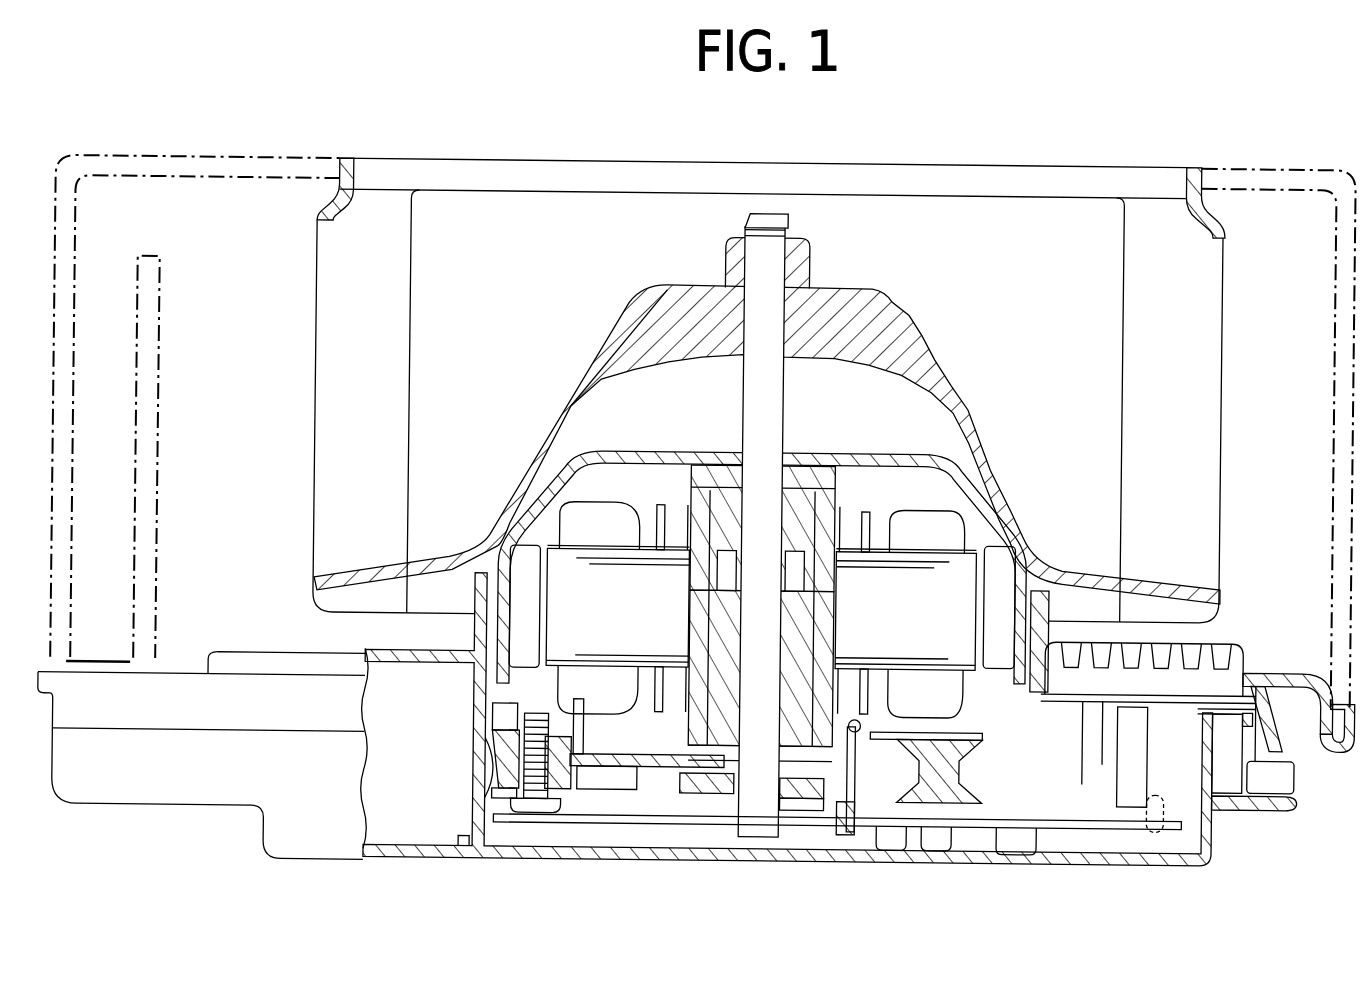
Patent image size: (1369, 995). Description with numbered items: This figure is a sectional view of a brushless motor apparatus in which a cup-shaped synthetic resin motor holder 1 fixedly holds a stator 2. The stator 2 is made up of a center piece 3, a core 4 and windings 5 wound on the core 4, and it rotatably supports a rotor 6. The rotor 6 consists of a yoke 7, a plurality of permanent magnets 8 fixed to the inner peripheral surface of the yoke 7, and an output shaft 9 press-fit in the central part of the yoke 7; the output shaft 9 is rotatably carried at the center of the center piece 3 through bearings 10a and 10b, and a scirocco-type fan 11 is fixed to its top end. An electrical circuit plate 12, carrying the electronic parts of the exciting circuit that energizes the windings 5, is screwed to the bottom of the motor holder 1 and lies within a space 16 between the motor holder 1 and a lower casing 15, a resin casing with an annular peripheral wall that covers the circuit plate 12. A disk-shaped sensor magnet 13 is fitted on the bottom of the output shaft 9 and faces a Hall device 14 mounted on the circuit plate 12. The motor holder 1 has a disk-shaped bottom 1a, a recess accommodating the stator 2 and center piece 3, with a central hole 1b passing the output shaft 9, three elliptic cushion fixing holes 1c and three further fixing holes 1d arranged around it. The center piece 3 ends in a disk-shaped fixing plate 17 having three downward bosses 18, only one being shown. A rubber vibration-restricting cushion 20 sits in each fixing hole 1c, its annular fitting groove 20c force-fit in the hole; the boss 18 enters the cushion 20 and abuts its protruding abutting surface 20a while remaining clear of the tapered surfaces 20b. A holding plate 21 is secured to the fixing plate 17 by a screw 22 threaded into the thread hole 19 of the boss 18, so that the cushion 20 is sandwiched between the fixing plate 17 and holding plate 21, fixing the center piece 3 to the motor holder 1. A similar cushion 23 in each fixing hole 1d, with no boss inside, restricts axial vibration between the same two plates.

The motor holder 1 is at (348, 653).
The disk-shaped bottom (recess) 1a is at (644, 790).
The central hole 1b is at (733, 762).
The cushion fixing holes 1c is at (492, 778).
The cushion fixing holes 1d is at (968, 768).
The stator 2 is at (966, 510).
The center piece 3 is at (840, 522).
The core 4 is at (975, 538).
The windings 5 is at (927, 507).
The rotor 6 is at (575, 447).
The yoke 7 is at (658, 455).
The permanent magnets 8 is at (514, 564).
The output shaft 9 is at (784, 374).
The bearing 10a is at (704, 466).
The bearing 10b is at (727, 652).
The scirocco-type fan 11 is at (944, 165).
The electrical circuit plate 12 is at (1088, 835).
The sensor magnet 13 is at (819, 793).
The Hall device 14 is at (711, 817).
The lower casing 15 is at (1153, 870).
The space 16 is at (1041, 852).
The fixing plate 17 is at (610, 720).
The boss 18 is at (556, 786).
The thread hole 19 is at (527, 803).
The vibration-restricting cushion 20 is at (497, 742).
The abutting surface 20a is at (493, 710).
The tapered surfaces 20b is at (497, 790).
The fitting groove 20c is at (576, 745).
The holding plate 21 is at (590, 772).
The screw 22 is at (510, 856).
The vibration-restricting cushion 23 is at (980, 783).